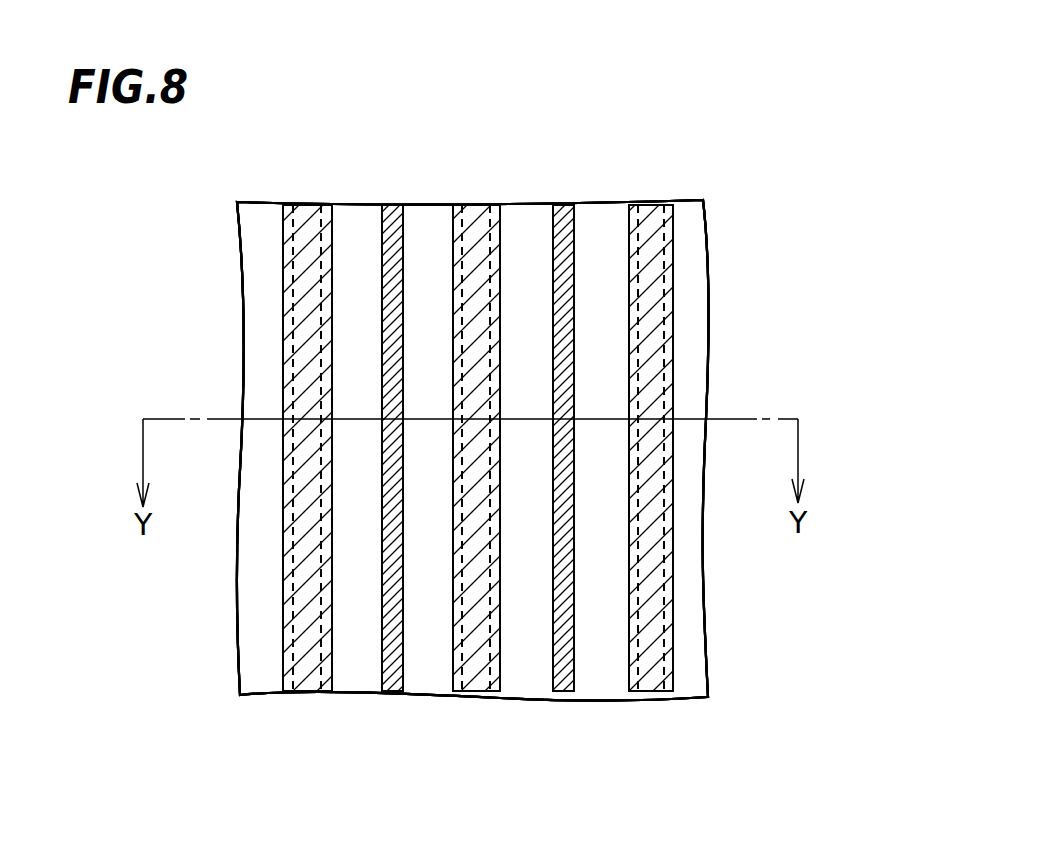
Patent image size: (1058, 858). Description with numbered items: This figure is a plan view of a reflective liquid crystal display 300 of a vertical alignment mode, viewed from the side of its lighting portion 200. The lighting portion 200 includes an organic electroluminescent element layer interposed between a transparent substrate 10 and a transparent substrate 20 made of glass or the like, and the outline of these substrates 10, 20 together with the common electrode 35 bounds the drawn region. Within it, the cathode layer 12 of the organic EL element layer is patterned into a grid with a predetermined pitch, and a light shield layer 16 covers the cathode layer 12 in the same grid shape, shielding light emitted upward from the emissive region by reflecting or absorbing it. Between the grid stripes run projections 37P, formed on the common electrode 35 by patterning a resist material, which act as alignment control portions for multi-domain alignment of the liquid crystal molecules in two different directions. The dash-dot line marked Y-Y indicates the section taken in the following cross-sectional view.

The cathode layer 12 is at (310, 203).
The light shield layer 16 is at (330, 204).
The projections 37P is at (393, 204).
The transparent substrate 10 is at (708, 268).
The transparent substrate 20 is at (708, 268).
The common electrode 35 is at (708, 268).
The lighting portion 200 is at (778, 179).
The reflective LCD 300 is at (778, 179).